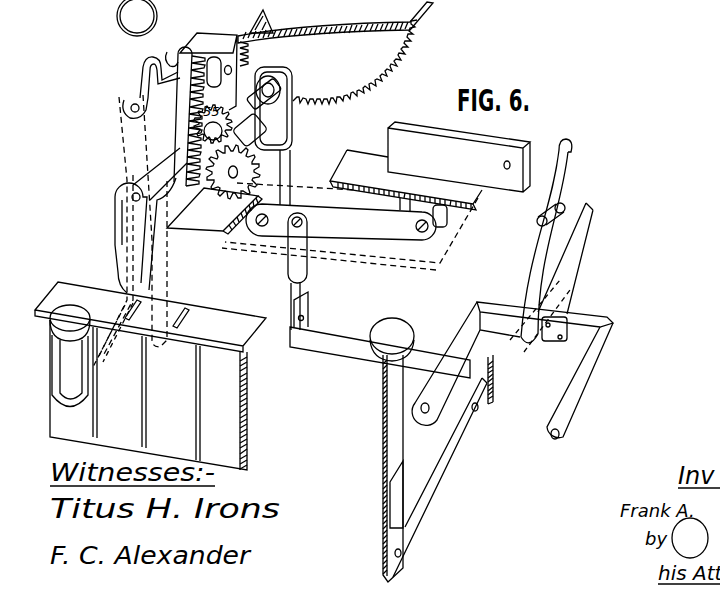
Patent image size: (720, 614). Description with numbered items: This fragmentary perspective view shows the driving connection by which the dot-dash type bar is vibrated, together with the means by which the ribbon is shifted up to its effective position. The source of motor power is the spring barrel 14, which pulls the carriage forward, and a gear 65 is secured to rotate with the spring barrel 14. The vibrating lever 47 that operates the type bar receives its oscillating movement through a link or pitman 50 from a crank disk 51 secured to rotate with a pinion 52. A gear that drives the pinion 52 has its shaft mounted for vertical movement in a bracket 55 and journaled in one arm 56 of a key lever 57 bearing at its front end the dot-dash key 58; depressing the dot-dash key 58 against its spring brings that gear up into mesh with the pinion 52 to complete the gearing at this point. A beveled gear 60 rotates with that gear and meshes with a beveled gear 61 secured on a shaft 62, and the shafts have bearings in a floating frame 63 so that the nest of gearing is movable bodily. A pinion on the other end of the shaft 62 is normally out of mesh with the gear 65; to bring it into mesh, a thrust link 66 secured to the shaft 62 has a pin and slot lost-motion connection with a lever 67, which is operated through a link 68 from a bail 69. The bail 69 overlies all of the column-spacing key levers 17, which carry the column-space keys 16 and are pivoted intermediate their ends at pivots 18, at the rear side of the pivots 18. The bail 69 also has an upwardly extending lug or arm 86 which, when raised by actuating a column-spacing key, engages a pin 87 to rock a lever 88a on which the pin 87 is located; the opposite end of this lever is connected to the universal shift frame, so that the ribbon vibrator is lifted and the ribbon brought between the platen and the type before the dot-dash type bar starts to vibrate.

The spring barrel 14 is at (428, 20).
The column-space key 16 is at (397, 327).
The lever 17 is at (465, 449).
The pivot 18 is at (479, 407).
The vibrating lever 47 is at (123, 140).
The link or pitman 50 is at (140, 70).
The crank disk 51 is at (172, 54).
The pinion 52 is at (190, 58).
The bracket 55 is at (186, 123).
The arm 56 is at (164, 170).
The key lever 57 is at (143, 277).
The dot-dash key 58 is at (72, 308).
The beveled gear 60 is at (230, 120).
The beveled gear 61 is at (228, 178).
The shaft 62 is at (252, 133).
The floating frame 63 is at (251, 165).
The gear 65 is at (330, 105).
The thrust link 66 is at (272, 178).
The lever 67 is at (349, 220).
The link 68 is at (304, 256).
The bail 69 is at (478, 302).
The lug or arm 86 is at (530, 260).
The pin 87 is at (547, 213).
The lever 88a is at (558, 170).